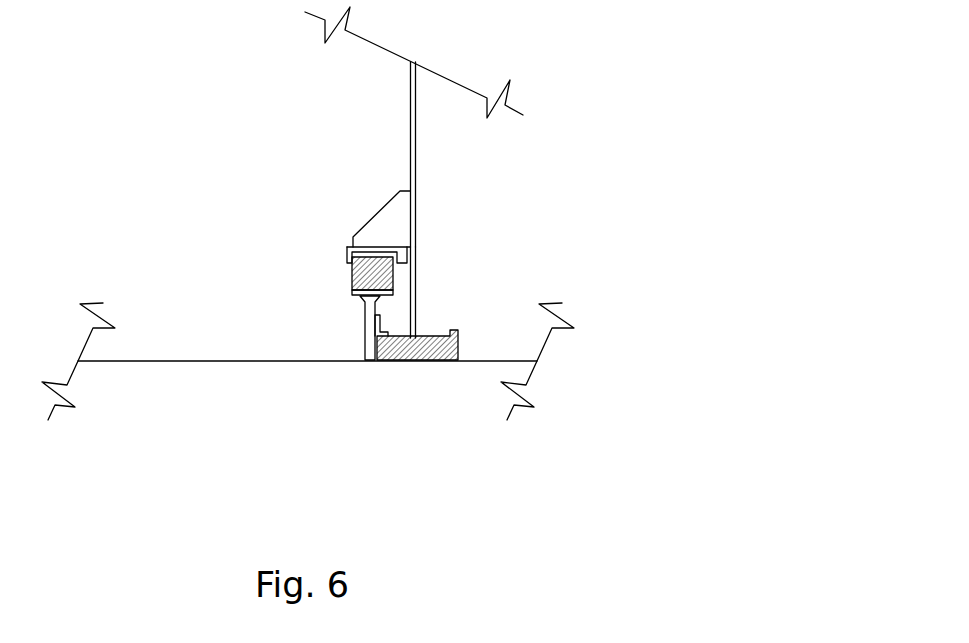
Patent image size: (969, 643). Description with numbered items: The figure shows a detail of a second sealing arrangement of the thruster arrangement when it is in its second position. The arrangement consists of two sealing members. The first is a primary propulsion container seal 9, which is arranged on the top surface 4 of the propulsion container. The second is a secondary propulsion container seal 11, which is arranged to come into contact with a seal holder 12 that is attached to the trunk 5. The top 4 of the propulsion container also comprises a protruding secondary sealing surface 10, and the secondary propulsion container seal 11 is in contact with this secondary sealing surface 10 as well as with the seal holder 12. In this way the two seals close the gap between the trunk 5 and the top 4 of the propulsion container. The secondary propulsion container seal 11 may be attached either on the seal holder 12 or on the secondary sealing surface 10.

The top surface of the propulsion container 4 is at (167, 358).
The trunk 5 is at (413, 292).
The primary propulsion container seal 9 is at (413, 350).
The secondary sealing surface 10 is at (357, 292).
The secondary propulsion container seal 11 is at (357, 275).
The seal holder 12 is at (413, 203).